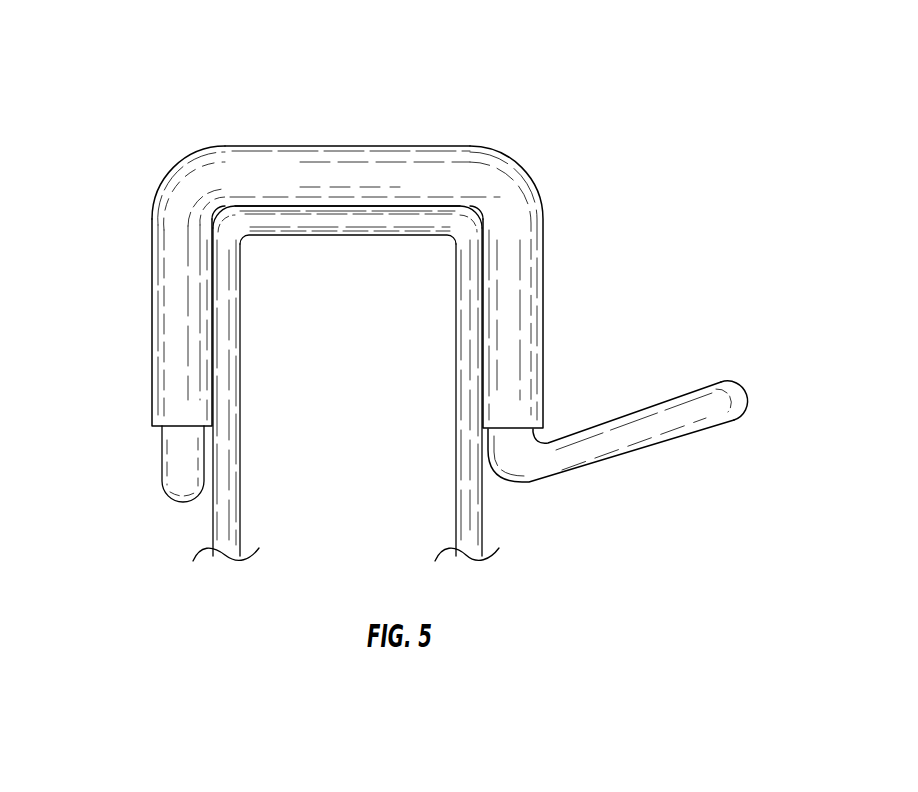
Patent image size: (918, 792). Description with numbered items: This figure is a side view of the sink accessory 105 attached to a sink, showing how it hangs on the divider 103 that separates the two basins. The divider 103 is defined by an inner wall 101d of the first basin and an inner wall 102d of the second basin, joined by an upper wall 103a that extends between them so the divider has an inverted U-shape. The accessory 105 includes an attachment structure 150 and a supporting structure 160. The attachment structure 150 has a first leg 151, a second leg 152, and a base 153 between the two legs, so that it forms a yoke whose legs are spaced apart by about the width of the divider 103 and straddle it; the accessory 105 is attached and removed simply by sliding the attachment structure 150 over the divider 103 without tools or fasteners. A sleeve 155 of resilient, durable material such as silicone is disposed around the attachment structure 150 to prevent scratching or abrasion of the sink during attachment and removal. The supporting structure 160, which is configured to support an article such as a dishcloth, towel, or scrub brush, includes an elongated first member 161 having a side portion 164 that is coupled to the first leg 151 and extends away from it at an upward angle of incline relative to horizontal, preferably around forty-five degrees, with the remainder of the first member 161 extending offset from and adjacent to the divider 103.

The accessory 105 is at (88, 125).
The attachment structure 150 is at (553, 68).
The first leg 151 is at (528, 317).
The second leg 152 is at (170, 348).
The base 153 is at (342, 163).
The sleeve 155 is at (150, 262).
The divider 103 is at (228, 637).
The wall 103a is at (323, 230).
The inner wall 101d is at (230, 508).
The inner wall 102d is at (462, 452).
The supporting structure 160 is at (708, 487).
The first member 161 is at (745, 392).
The side portion 164 is at (607, 458).